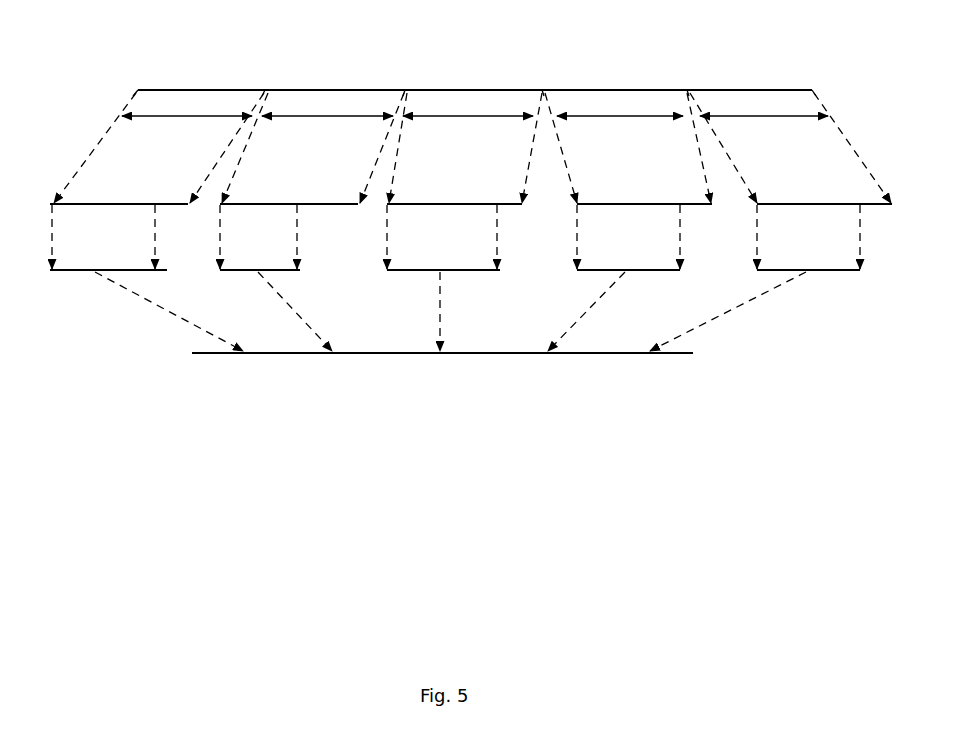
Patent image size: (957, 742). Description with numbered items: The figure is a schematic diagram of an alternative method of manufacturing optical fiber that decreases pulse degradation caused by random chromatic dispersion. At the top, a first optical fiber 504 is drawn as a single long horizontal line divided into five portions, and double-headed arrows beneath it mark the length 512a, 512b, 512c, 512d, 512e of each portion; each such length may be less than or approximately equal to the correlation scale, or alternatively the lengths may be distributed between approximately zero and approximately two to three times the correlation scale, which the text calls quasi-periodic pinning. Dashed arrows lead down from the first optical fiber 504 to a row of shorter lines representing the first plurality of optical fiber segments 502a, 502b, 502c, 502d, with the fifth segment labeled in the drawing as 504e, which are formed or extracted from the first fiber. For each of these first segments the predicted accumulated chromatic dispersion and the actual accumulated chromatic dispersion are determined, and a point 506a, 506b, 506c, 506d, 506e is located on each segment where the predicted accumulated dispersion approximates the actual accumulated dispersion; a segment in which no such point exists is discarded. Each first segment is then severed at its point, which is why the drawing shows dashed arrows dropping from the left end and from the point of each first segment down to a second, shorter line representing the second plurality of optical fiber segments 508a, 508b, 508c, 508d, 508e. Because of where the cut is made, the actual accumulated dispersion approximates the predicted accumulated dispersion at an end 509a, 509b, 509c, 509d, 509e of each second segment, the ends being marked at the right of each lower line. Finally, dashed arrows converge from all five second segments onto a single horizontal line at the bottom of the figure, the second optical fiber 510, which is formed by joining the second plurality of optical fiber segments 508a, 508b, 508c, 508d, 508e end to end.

The first optical fiber 504 is at (248, 89).
The sub-band e 504e is at (802, 203).
The length 512a is at (203, 114).
The length 512b is at (347, 114).
The length 512c is at (485, 114).
The length 512d is at (636, 114).
The length 512e is at (777, 114).
The first optical fiber segment 502a is at (104, 203).
The first optical fiber segment 502b is at (293, 203).
The first optical fiber segment 502c is at (452, 203).
The first optical fiber segment 502d is at (632, 203).
The second optical fiber segment 508a is at (106, 269).
The second optical fiber segment 508b is at (237, 269).
The second optical fiber segment 508c is at (407, 269).
The second optical fiber segment 508d is at (606, 269).
The second optical fiber segment 508e is at (786, 269).
The point 506a is at (156, 205).
The point 506b is at (298, 205).
The point 506c is at (498, 205).
The point 506d is at (681, 205).
The point 506e is at (861, 205).
The end 509a is at (150, 271).
The end 509b is at (290, 271).
The end 509c is at (492, 271).
The end 509d is at (675, 271).
The end 509e is at (855, 271).
The second optical fiber 510 is at (268, 355).